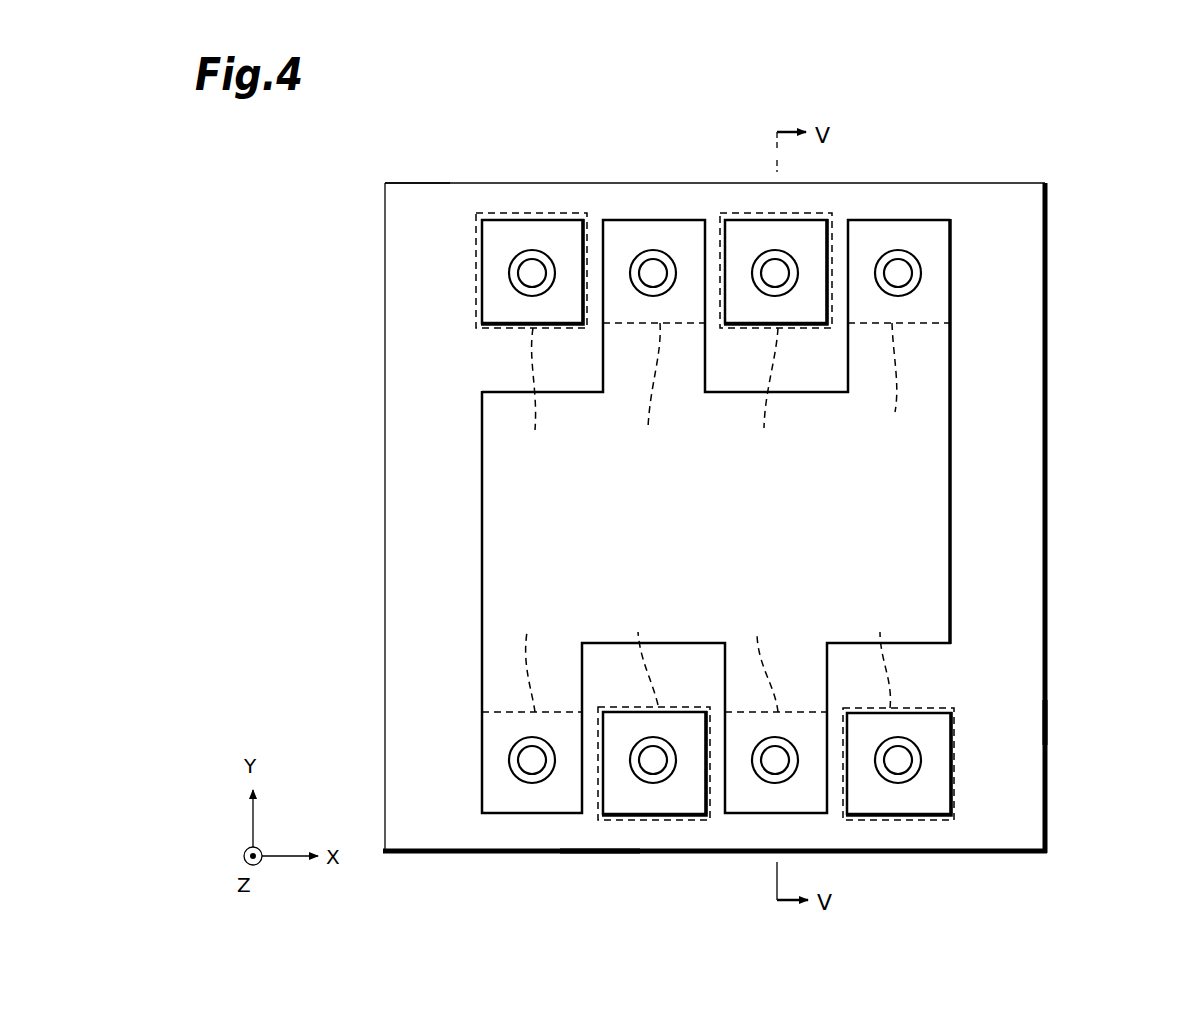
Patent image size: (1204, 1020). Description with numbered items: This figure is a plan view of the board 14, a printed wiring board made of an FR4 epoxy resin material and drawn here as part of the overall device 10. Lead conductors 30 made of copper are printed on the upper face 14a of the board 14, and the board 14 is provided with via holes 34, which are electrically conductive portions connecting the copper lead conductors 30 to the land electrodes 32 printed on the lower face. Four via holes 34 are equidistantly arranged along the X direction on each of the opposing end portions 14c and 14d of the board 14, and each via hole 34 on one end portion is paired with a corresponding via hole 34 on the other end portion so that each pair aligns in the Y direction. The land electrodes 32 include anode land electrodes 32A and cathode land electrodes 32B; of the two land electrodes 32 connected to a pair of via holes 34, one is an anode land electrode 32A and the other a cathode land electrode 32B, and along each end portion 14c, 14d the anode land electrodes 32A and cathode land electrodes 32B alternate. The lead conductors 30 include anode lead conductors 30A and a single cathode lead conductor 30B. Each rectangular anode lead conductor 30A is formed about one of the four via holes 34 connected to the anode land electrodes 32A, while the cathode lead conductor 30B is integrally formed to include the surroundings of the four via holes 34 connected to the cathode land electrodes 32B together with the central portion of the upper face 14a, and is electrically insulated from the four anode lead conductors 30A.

The circuit board / wiring substrate 10 is at (1106, 241).
The board 14 is at (1052, 623).
The upper face 14a is at (1018, 720).
The end portion 14c is at (432, 195).
The end portion 14d is at (586, 838).
The lead conductors 30 is at (672, 527).
The anode lead conductors 30A is at (527, 220).
The cathode lead conductor 30B is at (482, 503).
The land electrodes 32 is at (716, 517).
The anode land electrodes 32A is at (711, 518).
The cathode land electrodes 32B is at (716, 517).
The via holes 34 is at (516, 254).